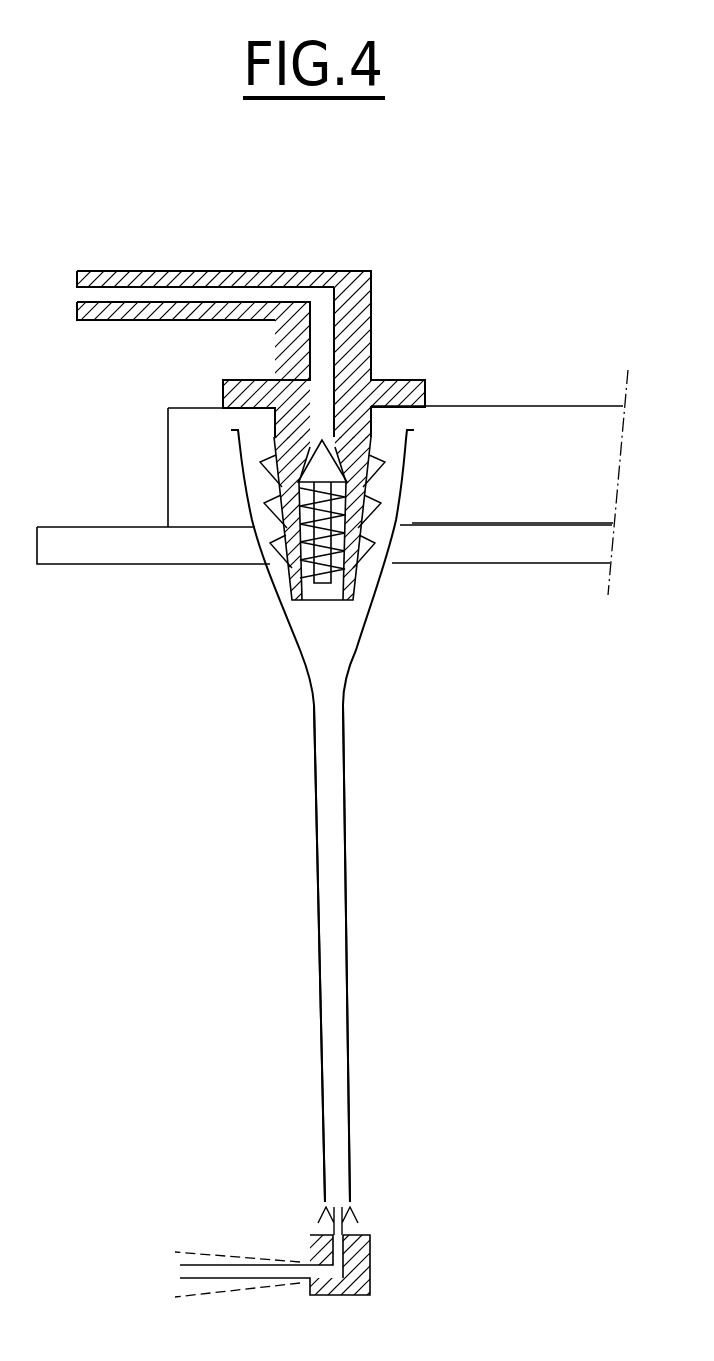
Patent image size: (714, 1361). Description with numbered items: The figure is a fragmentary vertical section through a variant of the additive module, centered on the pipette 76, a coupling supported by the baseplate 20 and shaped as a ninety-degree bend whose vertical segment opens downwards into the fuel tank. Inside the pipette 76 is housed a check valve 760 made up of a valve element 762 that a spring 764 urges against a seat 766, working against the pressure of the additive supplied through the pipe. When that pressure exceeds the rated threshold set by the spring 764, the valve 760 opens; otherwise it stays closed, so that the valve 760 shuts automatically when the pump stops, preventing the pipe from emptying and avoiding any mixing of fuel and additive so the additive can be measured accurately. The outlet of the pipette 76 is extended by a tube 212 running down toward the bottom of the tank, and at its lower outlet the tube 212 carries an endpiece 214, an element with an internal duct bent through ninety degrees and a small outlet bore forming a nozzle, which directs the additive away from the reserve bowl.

The pipette 76 is at (343, 270).
The seat 766 is at (375, 373).
The baseplate 20 is at (543, 438).
The valve element 762 is at (320, 468).
The check valve 760 is at (233, 577).
The spring 764 is at (323, 595).
The tube 212 is at (332, 910).
The endpiece 214 is at (383, 1258).